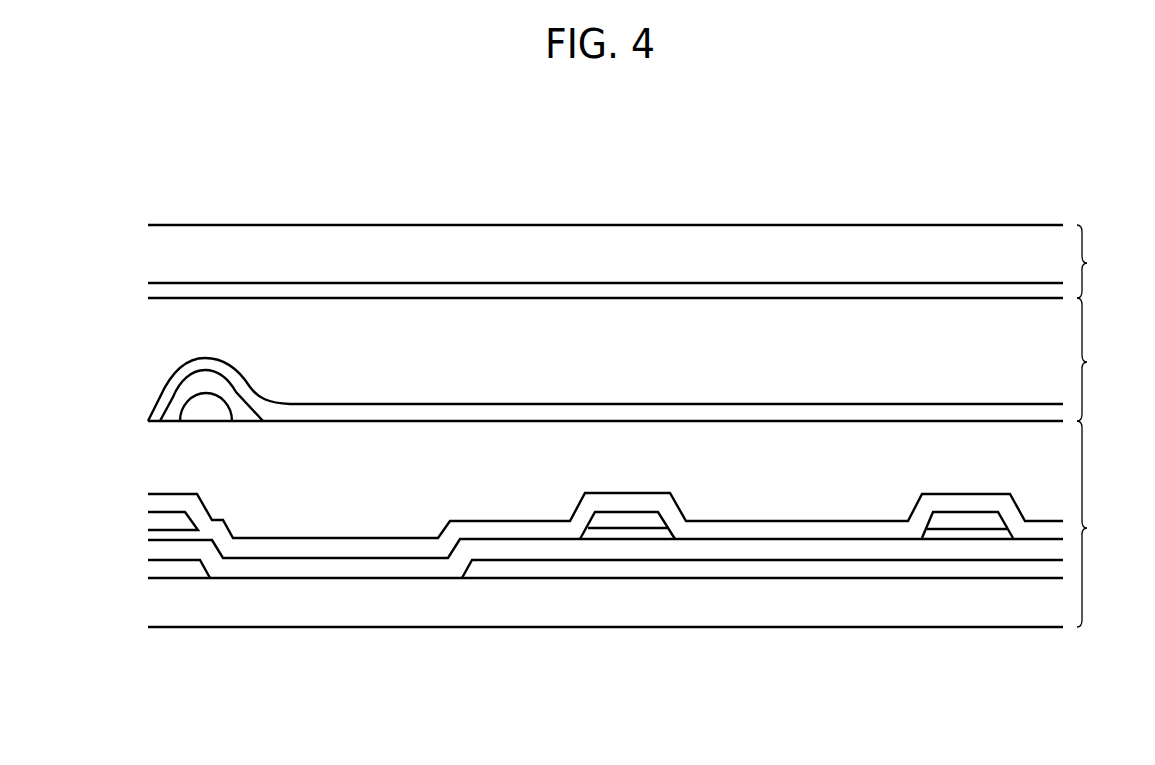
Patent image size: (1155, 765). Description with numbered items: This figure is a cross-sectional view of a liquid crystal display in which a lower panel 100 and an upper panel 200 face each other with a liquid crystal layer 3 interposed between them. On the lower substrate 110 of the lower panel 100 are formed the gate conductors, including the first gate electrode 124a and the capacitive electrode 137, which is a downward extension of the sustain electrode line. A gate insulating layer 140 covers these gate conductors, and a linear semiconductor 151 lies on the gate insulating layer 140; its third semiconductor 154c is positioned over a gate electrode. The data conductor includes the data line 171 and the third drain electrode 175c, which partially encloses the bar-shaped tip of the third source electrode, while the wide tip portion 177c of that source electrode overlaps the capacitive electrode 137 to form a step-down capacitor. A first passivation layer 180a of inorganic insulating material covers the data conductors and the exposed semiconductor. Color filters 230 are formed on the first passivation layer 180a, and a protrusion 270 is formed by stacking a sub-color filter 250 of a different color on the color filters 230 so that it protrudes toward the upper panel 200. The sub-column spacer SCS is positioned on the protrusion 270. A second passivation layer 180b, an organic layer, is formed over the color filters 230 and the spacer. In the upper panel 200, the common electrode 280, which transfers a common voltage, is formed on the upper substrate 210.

The upper substrate 210 is at (158, 254).
The common electrode 280 is at (158, 291).
The protrusion 270 is at (192, 395).
The sub-color filter 250 is at (197, 410).
The sub-column spacer SCS is at (219, 387).
The color filter 230 is at (158, 458).
The wide tip portion of the third source electrode 177c is at (158, 520).
The lower substrate 110 is at (158, 604).
The capacitive electrode 137 is at (189, 568).
The gate insulating layer 140 is at (325, 568).
The first passivation layer 180a is at (400, 548).
The second passivation layer 180b is at (508, 413).
The third semiconductor 154c is at (610, 535).
The third drain electrode 175c is at (648, 523).
The first gate electrode 124a is at (748, 568).
The linear semiconductor 151 is at (948, 535).
The data line 171 is at (987, 523).
The upper panel 200 is at (1105, 261).
The liquid crystal layer 3 is at (1095, 359).
The lower panel 100 is at (1106, 524).